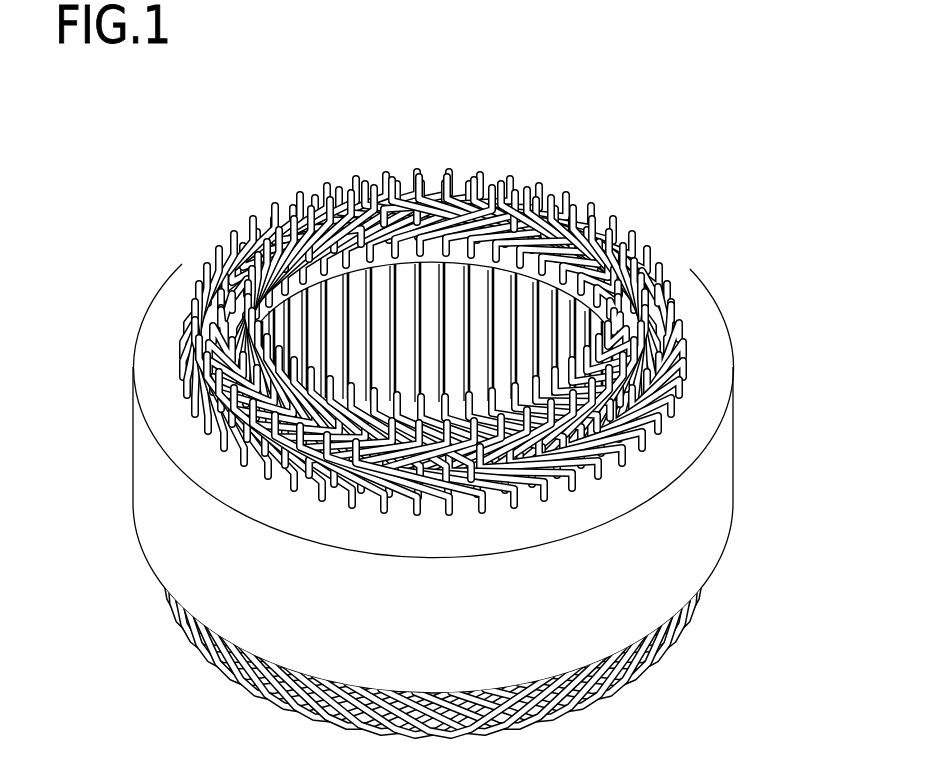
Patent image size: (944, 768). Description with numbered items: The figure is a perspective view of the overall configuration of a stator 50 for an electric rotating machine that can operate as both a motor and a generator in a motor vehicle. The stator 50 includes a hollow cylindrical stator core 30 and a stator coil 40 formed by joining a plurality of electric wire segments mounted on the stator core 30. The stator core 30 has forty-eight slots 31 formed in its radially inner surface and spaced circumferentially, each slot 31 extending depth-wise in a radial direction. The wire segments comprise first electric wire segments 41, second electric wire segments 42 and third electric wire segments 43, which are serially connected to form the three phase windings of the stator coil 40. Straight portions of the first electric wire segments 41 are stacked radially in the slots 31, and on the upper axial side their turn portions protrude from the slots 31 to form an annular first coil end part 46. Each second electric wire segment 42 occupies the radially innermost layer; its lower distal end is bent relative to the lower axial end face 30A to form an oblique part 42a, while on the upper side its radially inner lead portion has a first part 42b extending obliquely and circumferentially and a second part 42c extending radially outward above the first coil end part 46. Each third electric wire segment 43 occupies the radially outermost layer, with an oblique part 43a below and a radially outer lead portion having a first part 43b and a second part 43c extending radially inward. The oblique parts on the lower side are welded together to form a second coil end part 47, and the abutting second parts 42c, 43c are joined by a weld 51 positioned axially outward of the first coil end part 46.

The stator core 30 is at (705, 347).
The axial end face 30A is at (647, 488).
The slots 31 is at (552, 350).
The stator coil 40 is at (362, 183).
The first electric wire segments 41 is at (578, 228).
The second electric wire segments 42 is at (668, 421).
The oblique part 42a is at (647, 463).
The first part 42b is at (533, 200).
The second part 42c is at (235, 243).
The third electric wire segments 43 is at (195, 420).
The oblique part 43a is at (252, 692).
The first part 43b is at (235, 465).
The second part 43c is at (212, 247).
The first coil end part 46 is at (697, 382).
The second coil end part 47 is at (697, 637).
The stator 50 is at (440, 130).
The weld 51 is at (207, 250).